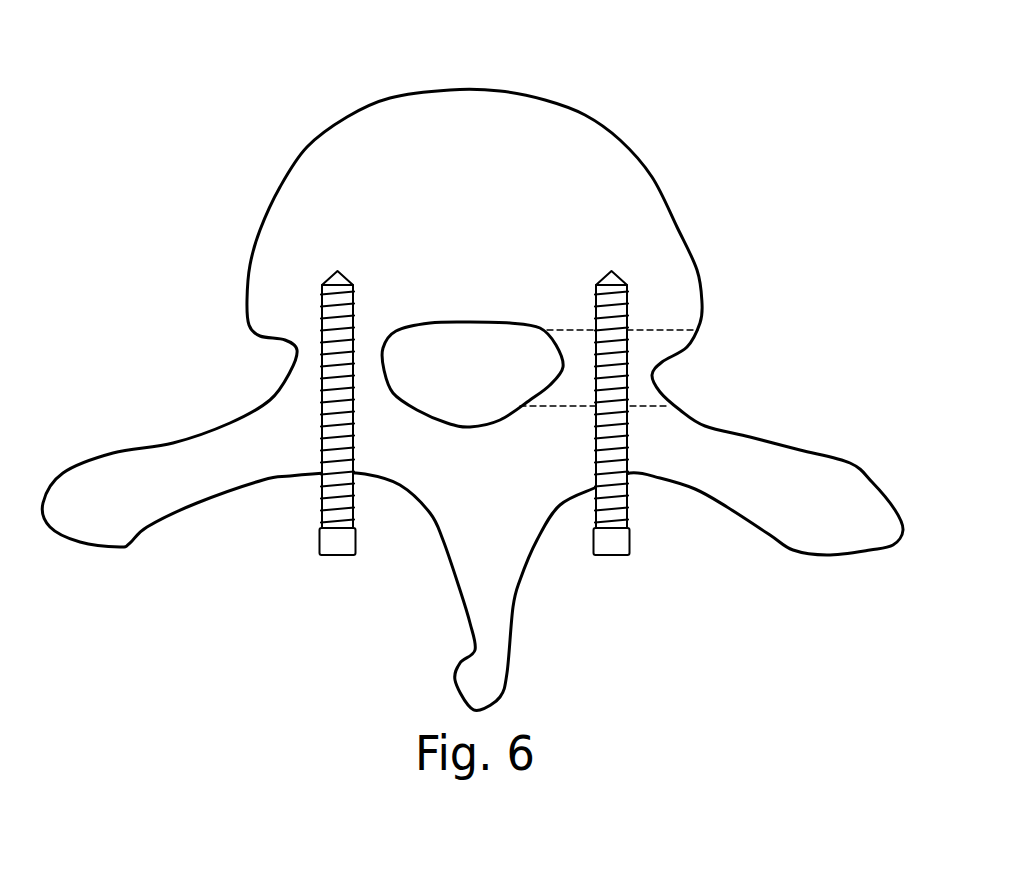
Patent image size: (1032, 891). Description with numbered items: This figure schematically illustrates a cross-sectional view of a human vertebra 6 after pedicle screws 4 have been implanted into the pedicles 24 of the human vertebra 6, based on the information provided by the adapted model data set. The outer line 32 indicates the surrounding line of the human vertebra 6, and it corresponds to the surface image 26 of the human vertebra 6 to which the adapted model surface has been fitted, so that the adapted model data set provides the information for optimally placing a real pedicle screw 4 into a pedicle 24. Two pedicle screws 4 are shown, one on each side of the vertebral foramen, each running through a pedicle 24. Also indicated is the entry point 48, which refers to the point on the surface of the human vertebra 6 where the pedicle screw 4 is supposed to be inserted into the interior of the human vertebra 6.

The human vertebra 6 is at (472, 360).
The outer line 32 is at (472, 399).
The surface image 26 is at (652, 177).
The pedicle screw 4 is at (549, 403).
The pedicle 24 is at (667, 347).
The entry point 48 is at (632, 485).